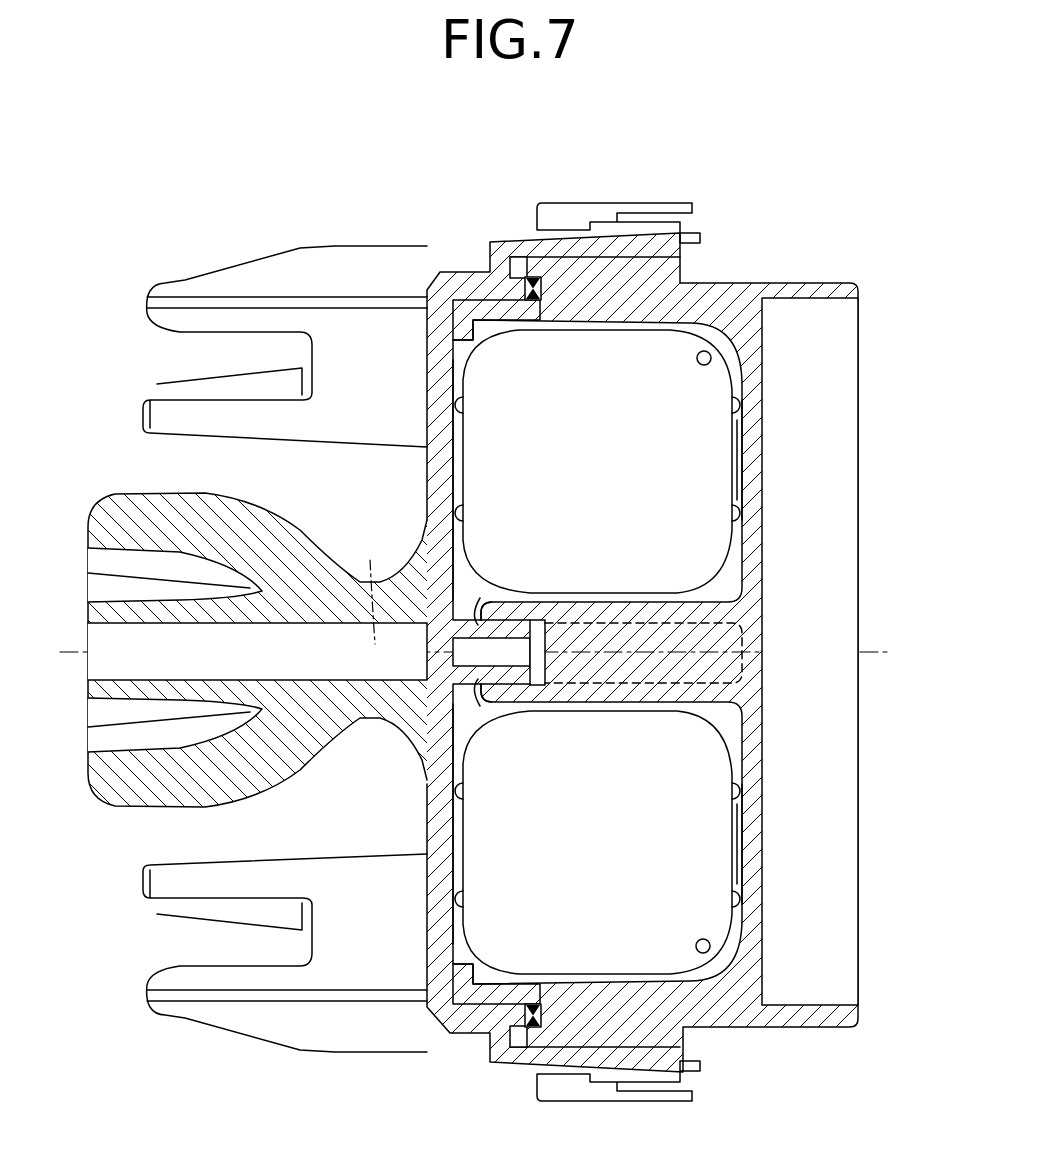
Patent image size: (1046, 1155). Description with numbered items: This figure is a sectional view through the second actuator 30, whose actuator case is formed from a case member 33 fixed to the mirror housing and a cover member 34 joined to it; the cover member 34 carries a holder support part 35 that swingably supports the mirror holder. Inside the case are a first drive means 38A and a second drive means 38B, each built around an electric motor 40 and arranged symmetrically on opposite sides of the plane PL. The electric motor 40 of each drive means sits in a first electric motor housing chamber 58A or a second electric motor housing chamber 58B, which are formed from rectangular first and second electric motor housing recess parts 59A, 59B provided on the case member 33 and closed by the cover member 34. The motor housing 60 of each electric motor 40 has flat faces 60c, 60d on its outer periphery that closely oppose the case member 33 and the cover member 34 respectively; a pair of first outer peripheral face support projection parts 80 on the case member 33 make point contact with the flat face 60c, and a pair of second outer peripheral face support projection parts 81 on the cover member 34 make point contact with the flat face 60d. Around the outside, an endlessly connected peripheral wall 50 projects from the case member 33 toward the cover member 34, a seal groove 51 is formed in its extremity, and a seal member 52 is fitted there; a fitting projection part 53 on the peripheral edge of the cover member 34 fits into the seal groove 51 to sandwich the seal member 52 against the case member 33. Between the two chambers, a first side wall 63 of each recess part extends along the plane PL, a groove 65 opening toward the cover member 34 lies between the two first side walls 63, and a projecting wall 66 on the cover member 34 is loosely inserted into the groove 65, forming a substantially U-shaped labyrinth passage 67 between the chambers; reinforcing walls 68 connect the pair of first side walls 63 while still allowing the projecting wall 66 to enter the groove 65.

The second actuator 30 is at (758, 252).
The case member 33 is at (745, 690).
The cover member 34 is at (430, 786).
The holder support part 35 is at (160, 790).
The first drive means 38A is at (728, 736).
The second drive means 38B is at (724, 566).
The electric motor 40 is at (748, 472).
The peripheral wall 50 is at (527, 1036).
The seal groove 51 is at (528, 280).
The seal member 52 is at (530, 1006).
The fitting projection part 53 is at (520, 262).
The first electric motor housing chamber 58A is at (500, 977).
The second electric motor housing chamber 58B is at (445, 345).
The first electric motor housing recess part 59A is at (708, 947).
The second electric motor housing recess part 59B is at (706, 355).
The motor housing 60 is at (458, 472).
The flat face 60c is at (733, 434).
The flat face 60d is at (458, 432).
The first side wall 63 is at (505, 608).
The groove 65 is at (583, 620).
The projecting wall 66 is at (500, 693).
The labyrinth passage 67 is at (480, 598).
The reinforcing wall 68 is at (480, 706).
The first outer peripheral face support projection part 80 is at (733, 508).
The second outer peripheral face support projection part 81 is at (466, 506).
The plane PL is at (369, 586).